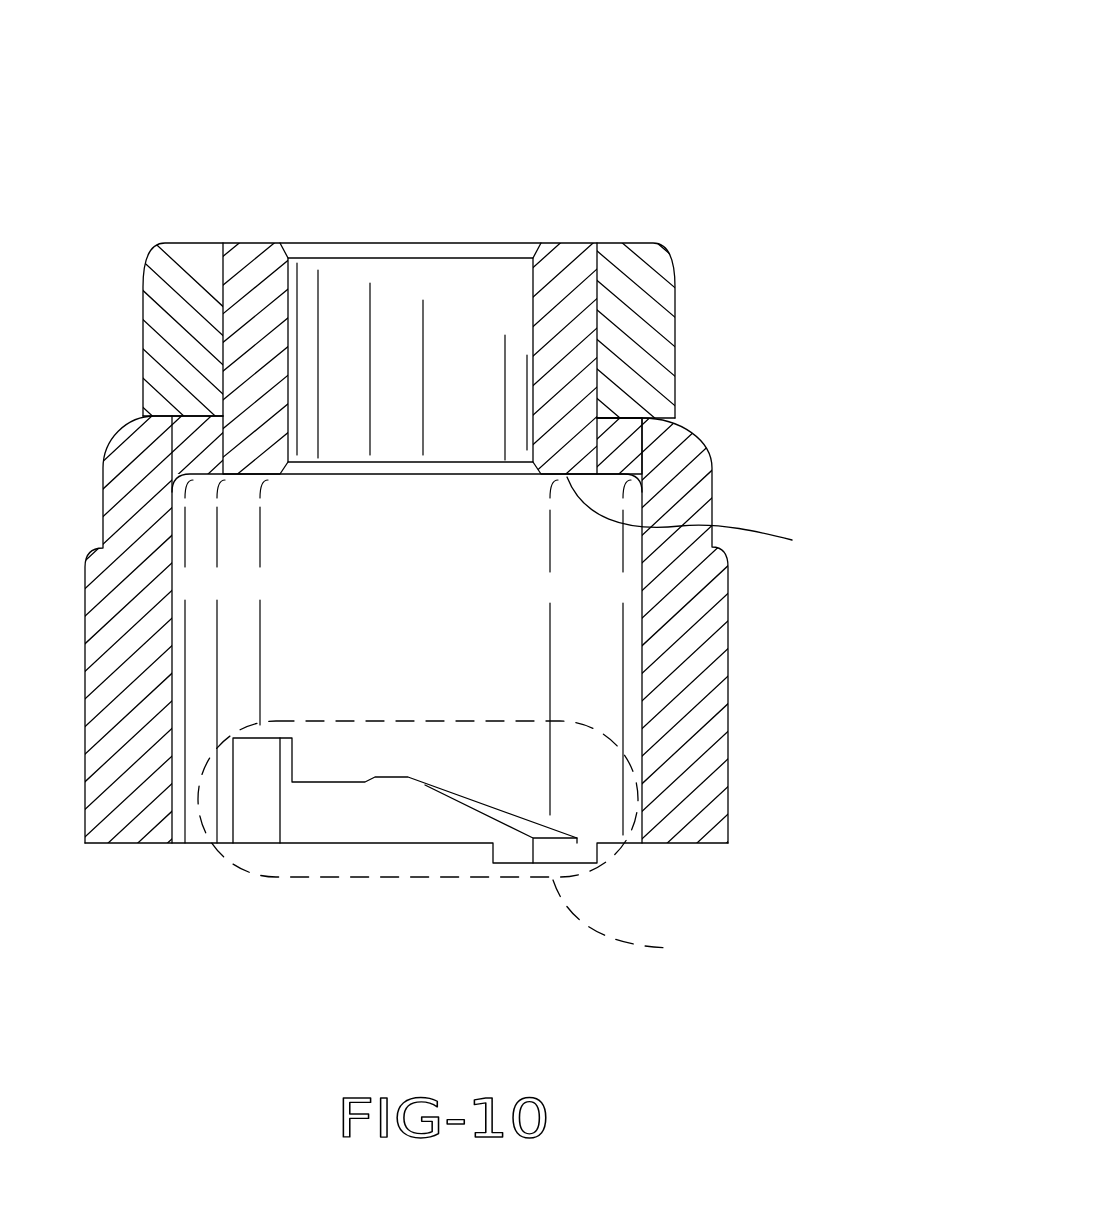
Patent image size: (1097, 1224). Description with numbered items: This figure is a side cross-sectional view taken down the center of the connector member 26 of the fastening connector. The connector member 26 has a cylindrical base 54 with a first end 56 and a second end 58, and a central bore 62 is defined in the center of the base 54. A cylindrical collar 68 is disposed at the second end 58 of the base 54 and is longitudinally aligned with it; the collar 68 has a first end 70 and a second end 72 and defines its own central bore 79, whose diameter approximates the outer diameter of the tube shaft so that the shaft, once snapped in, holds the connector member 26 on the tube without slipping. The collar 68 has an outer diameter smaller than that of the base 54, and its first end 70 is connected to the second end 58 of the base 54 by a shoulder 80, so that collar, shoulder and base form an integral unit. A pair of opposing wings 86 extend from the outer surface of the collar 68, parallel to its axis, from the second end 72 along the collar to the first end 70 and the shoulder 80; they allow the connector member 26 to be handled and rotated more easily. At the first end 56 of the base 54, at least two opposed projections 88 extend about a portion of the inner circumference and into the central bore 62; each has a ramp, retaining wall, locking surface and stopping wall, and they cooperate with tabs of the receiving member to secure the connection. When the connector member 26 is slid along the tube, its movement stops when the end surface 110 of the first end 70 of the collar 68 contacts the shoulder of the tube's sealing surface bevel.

The connector member 26 is at (680, 113).
The central bore 79 is at (473, 272).
The second end 72 is at (583, 247).
The wings 86 is at (158, 260).
The cylindrical collar 68 is at (610, 339).
The first end 70 is at (597, 433).
The shoulder 80 is at (623, 453).
The second end 58 is at (695, 467).
The end surface 110 is at (707, 516).
The cylindrical base 54 is at (730, 551).
The central bore 62 is at (460, 640).
The first end 56 is at (690, 846).
The projections 88 is at (362, 822).